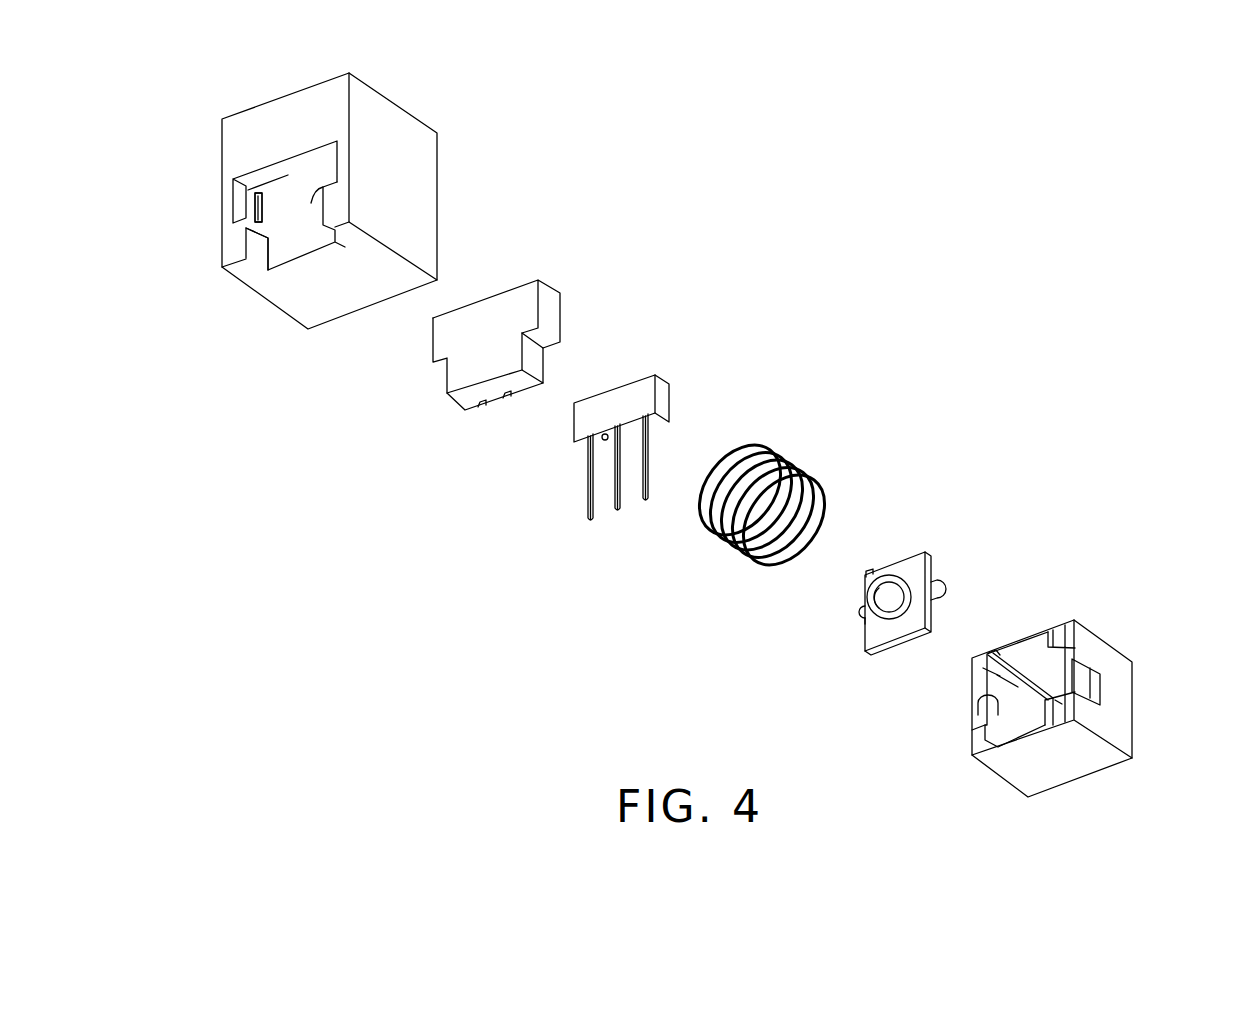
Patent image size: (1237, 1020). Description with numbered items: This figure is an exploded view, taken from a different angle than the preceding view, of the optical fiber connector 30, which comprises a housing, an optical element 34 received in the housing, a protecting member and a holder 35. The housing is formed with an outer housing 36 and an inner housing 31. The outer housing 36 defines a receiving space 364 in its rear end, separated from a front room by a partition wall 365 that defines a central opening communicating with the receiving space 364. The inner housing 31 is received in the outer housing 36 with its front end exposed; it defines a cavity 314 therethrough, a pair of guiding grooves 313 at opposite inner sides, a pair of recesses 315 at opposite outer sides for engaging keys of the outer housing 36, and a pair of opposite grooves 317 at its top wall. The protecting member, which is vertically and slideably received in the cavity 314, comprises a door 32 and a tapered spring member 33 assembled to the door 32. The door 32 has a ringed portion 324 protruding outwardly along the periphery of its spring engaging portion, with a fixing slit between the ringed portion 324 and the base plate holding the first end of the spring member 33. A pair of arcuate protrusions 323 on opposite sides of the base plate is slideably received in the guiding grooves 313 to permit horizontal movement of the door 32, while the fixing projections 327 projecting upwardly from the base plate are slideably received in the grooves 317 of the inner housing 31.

The optical fiber connector 30 is at (415, 32).
The inner housing 31 is at (1096, 615).
The guiding grooves 313 is at (1060, 706).
The cavity 314 is at (983, 673).
The recesses 315 is at (1103, 686).
The grooves 317 is at (993, 655).
The door 32 is at (942, 545).
The arcuate protrusions 323 is at (853, 607).
The ringed portion 324 is at (860, 620).
The fixing projections 327 is at (864, 573).
The spring member 33 is at (808, 447).
The optical element 34 is at (678, 360).
The holder 35 is at (564, 273).
The outer housing 36 is at (418, 104).
The receiving space 364 is at (256, 192).
The partition wall 365 is at (262, 229).